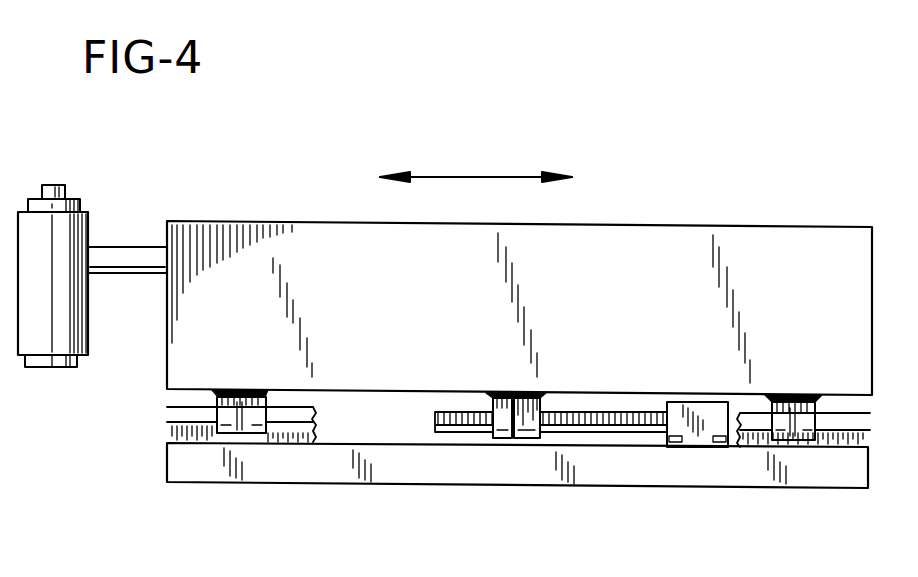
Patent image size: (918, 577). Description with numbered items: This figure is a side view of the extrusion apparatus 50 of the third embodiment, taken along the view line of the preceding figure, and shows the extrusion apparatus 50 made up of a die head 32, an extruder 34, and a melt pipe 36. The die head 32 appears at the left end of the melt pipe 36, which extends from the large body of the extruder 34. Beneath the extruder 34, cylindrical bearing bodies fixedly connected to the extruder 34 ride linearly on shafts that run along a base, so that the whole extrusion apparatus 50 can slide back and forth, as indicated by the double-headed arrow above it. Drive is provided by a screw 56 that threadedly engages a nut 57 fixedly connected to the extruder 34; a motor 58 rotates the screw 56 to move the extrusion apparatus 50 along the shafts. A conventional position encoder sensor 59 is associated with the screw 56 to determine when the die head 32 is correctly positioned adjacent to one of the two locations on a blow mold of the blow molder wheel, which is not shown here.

The die head 32 is at (88, 313).
The extruder 34 is at (760, 240).
The melt pipe 36 is at (118, 250).
The extrusion apparatus 50 is at (644, 206).
The screw 56 is at (470, 430).
The nut 57 is at (523, 430).
The motor 58 is at (695, 430).
The position encoder sensor 59 is at (502, 438).